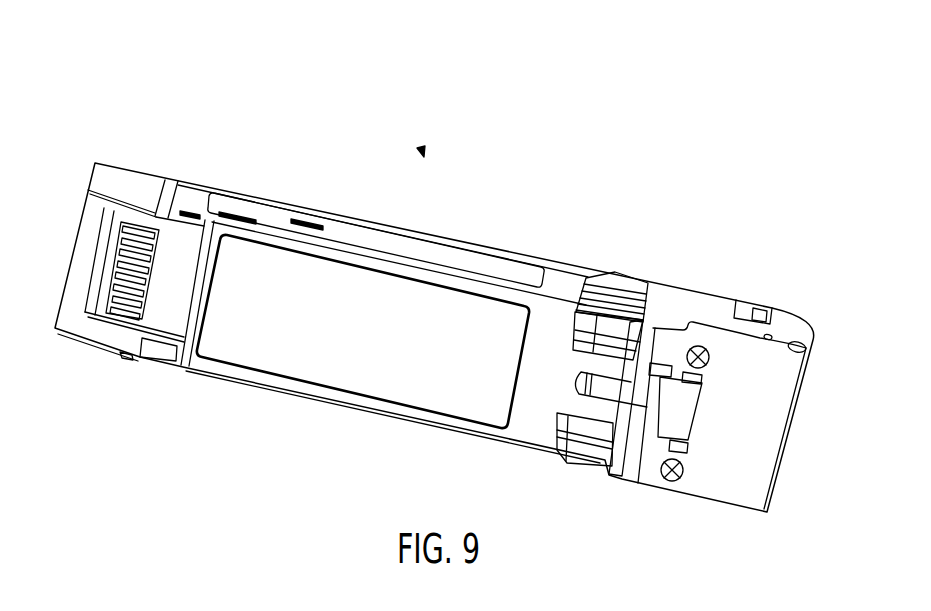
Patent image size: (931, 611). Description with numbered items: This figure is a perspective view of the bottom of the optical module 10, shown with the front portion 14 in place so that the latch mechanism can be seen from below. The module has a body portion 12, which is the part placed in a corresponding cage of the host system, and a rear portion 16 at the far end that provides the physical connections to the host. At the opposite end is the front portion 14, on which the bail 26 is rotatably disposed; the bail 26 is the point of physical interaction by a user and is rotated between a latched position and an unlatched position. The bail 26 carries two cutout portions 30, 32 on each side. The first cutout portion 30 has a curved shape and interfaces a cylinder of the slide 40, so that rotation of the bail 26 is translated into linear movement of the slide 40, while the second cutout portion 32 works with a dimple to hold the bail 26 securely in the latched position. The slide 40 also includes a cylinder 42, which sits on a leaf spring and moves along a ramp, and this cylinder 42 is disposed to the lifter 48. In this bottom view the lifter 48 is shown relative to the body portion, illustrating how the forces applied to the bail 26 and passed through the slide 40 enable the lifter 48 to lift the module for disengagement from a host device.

The optical module 10 is at (423, 152).
The body portion 12 is at (373, 222).
The front portion 14 is at (703, 307).
The rear portion 16 is at (142, 173).
The bail 26 is at (778, 304).
The first cutout portion 30 is at (793, 340).
The second cutout portion 32 is at (760, 305).
The slide 40 is at (660, 427).
The cylinder 42 is at (661, 364).
The lifter 48 is at (617, 393).